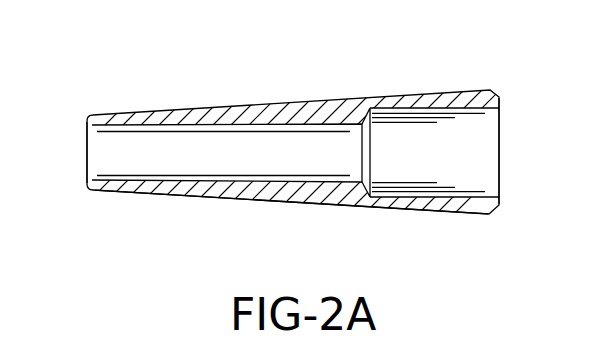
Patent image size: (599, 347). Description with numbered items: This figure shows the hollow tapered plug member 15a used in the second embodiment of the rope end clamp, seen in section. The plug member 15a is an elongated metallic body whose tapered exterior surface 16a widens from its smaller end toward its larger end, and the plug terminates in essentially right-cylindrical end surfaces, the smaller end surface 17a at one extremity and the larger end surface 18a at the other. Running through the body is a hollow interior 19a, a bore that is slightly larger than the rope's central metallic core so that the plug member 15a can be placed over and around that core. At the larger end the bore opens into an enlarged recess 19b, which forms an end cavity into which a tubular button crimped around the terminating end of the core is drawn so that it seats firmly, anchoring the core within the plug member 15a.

The hollow tapered plug member 15a is at (341, 92).
The tapered exterior surface 16a is at (362, 207).
The smaller end surface 17a is at (87, 155).
The larger end surface 18a is at (502, 133).
The hollow interior 19a is at (201, 127).
The enlarged recess 19b is at (489, 174).